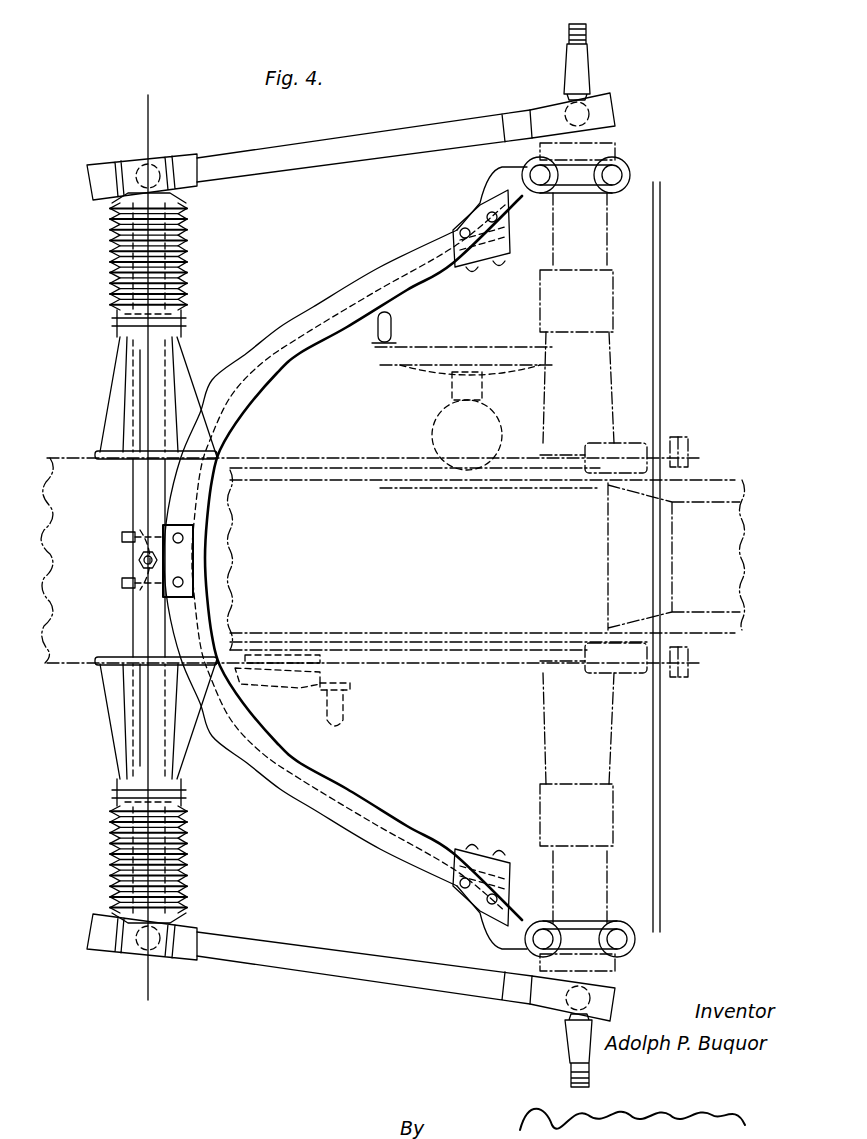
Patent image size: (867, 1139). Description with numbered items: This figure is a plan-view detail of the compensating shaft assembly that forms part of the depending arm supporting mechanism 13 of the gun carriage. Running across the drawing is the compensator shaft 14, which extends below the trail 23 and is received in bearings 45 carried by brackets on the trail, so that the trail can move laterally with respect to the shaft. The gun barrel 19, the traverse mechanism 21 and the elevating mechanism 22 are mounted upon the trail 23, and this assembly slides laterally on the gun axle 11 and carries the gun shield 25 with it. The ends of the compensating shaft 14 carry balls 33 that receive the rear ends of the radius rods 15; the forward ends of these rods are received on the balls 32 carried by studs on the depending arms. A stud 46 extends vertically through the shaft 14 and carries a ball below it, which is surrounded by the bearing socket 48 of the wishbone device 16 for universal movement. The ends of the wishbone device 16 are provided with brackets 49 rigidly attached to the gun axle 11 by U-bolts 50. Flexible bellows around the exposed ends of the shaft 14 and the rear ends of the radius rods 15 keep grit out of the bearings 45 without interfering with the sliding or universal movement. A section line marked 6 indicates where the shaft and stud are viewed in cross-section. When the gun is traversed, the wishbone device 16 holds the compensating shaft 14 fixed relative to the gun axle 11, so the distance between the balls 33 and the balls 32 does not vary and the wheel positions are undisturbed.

The section line 6- 6 is at (125, 107).
The gun axle 11 is at (596, 249).
The depending arm supporting mechanism 13 is at (111, 793).
The compensator shaft 14 is at (132, 490).
The radius rods 15 is at (348, 160).
The wishbone device 16 is at (285, 370).
The gun barrel 19 is at (742, 546).
The traverse mechanism 21 is at (432, 414).
The elevating mechanism 22 is at (292, 690).
The trail 23 is at (78, 666).
The gun shield 25 is at (661, 742).
The balls 32 is at (590, 114).
The balls 33 is at (160, 166).
The bearings 45 is at (125, 398).
The stud 46 is at (139, 560).
The bearing socket 48 is at (140, 585).
The brackets 49 is at (506, 238).
The U-bolts 50 is at (613, 175).